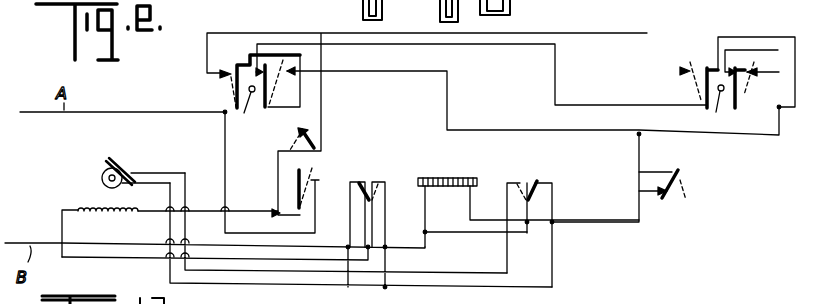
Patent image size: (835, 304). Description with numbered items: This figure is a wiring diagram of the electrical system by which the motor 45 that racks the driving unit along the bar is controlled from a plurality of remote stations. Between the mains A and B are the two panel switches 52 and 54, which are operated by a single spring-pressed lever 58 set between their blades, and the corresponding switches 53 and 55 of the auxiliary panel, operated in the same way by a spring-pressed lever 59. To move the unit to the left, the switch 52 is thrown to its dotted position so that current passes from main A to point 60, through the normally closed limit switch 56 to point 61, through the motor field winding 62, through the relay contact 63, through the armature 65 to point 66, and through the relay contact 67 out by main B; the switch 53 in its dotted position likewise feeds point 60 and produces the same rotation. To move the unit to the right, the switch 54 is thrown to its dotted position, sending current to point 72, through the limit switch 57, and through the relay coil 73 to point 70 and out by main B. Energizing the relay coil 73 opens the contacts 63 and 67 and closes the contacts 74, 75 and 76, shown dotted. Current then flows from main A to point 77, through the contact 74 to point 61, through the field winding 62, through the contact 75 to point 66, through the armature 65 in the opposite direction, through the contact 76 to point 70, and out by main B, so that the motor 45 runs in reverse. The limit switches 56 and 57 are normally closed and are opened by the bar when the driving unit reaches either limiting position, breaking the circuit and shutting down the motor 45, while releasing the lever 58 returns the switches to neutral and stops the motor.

The motor 45 is at (90, 153).
The switch 52 is at (226, 72).
The switch 53 is at (700, 85).
The switch 54 is at (478, 92).
The switch 55 is at (745, 87).
The cut-off limit switch 56 is at (315, 129).
The cut-off limit switch 57 is at (683, 184).
The lever 58 is at (243, 114).
The spring-pressed lever 59 is at (742, 108).
The point 60 is at (321, 33).
The point 61 is at (279, 211).
The motor field winding 62 is at (105, 214).
The relay contact 63 is at (357, 180).
The armature 65 is at (124, 168).
The point 66 is at (386, 288).
The relay contact 67 is at (540, 180).
The point 70 is at (425, 232).
The point 72 is at (638, 136).
The relay coil 73 is at (446, 178).
The contact 74 is at (312, 173).
The contact 75 is at (386, 182).
The contact 76 is at (516, 184).
The point 77 is at (224, 111).